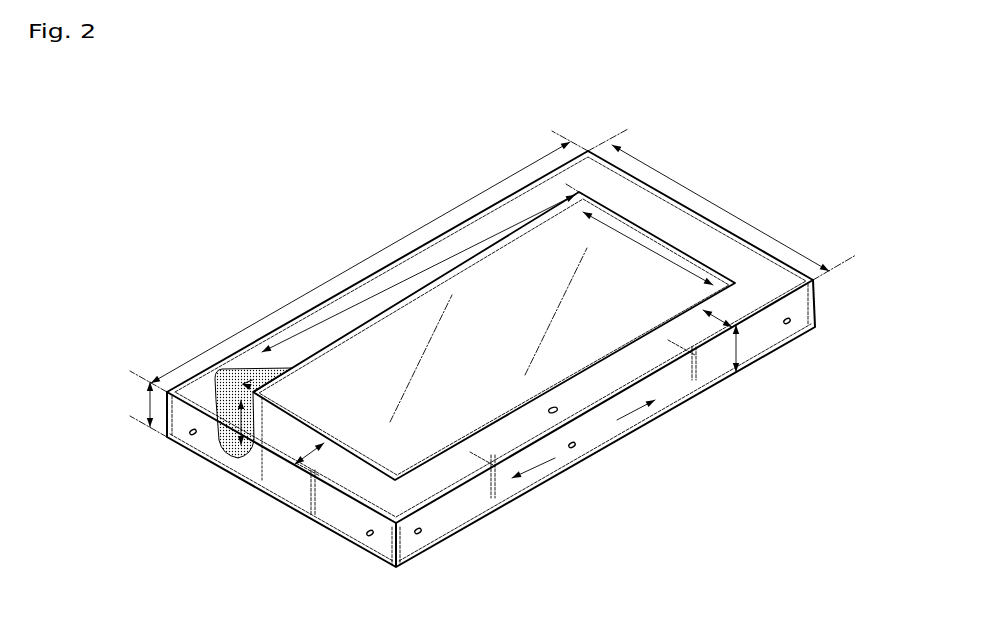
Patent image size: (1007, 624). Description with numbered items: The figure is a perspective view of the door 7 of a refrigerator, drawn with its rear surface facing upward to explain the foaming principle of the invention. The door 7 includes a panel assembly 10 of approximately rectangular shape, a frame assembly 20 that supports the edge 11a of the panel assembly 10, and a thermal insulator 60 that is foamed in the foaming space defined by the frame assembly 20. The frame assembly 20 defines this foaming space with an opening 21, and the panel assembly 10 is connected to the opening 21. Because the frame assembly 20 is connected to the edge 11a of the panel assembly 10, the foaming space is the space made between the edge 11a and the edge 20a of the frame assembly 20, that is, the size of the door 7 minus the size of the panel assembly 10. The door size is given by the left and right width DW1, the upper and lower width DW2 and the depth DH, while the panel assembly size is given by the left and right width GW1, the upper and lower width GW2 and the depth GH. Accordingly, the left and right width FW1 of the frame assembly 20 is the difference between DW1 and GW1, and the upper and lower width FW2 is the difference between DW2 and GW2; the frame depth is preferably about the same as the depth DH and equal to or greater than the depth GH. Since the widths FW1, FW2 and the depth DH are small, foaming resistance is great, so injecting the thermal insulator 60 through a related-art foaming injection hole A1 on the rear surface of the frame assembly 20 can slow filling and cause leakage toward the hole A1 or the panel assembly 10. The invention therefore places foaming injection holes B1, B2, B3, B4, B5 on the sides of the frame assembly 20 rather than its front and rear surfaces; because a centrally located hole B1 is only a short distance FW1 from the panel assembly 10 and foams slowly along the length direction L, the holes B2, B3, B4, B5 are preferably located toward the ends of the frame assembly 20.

The sub door 7 is at (437, 110).
The panel assembly 10 is at (262, 480).
The edge of the panel assembly 11a is at (723, 287).
The frame assembly 20 is at (333, 472).
The edge of the frame assembly 20a is at (607, 161).
The opening 21 is at (252, 384).
The thermal insulator 60 is at (222, 384).
The foaming injection hole A1 is at (558, 409).
The foaming injection hole B1 is at (573, 449).
The foaming injection hole B2 is at (788, 325).
The foaming injection hole B3 is at (419, 535).
The foaming injection hole B4 is at (370, 537).
The foaming injection hole B5 is at (191, 436).
The length direction L is at (541, 463).
The left and right width of the door DW1 is at (722, 204).
The upper and lower width of the door DW2 is at (359, 261).
The left and right width of the panel assembly GW1 is at (647, 248).
The upper and lower width of the panel assembly GW2 is at (421, 269).
The left and right width of the frame assembly FW1 is at (725, 312).
The upper and lower width of the frame assembly FW2 is at (301, 449).
The depth of the door DH is at (442, 381).
The depth of the panel assembly GH is at (233, 457).